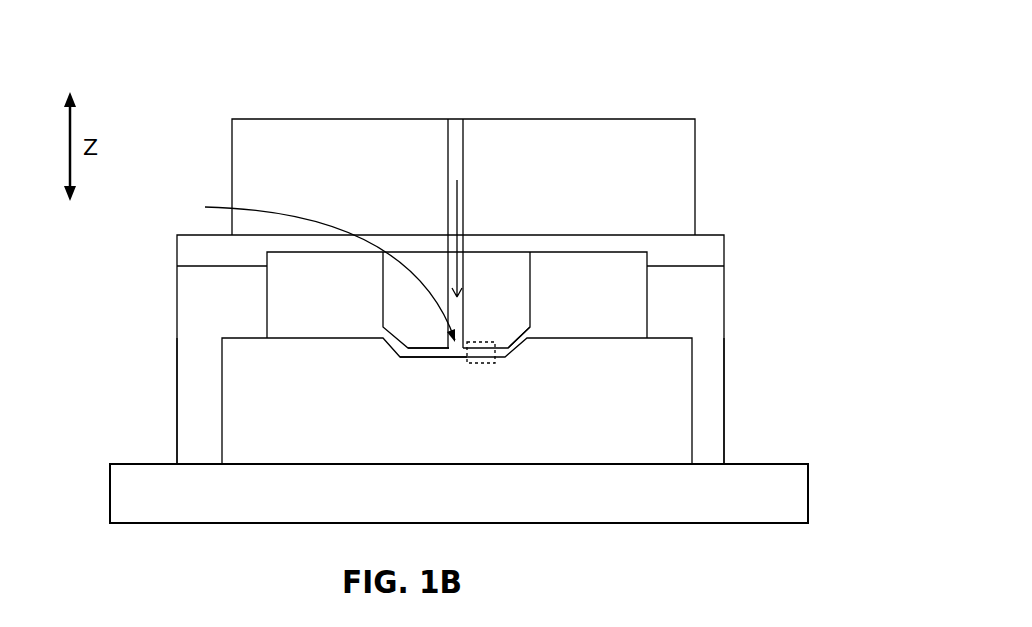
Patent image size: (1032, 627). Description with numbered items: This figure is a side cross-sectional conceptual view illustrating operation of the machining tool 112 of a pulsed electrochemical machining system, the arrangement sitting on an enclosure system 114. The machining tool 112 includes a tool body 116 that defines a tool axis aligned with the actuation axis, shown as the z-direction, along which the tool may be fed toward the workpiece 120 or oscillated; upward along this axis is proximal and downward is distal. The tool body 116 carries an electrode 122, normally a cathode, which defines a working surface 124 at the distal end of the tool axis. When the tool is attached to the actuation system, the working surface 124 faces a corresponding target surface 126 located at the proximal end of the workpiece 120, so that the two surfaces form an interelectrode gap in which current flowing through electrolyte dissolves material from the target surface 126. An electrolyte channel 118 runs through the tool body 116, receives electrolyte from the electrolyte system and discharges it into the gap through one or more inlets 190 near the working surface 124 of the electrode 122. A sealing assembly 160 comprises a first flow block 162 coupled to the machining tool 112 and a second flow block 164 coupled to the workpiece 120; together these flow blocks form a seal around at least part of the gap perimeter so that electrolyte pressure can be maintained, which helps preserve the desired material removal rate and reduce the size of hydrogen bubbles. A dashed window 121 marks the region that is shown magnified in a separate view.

The machining tool 112 is at (660, 110).
The enclosure system 114 is at (750, 464).
The tool body 116 is at (520, 280).
The electrolyte channel 118 is at (457, 119).
The workpiece 120 is at (692, 407).
The window 121 is at (492, 343).
The electrode 122 is at (515, 347).
The working surface 124 is at (417, 358).
The target surface 126 is at (445, 350).
The sealing assembly 160 is at (168, 285).
The first flow block 162 is at (177, 250).
The second flow block 164 is at (177, 318).
The inlets 190 is at (309, 269).